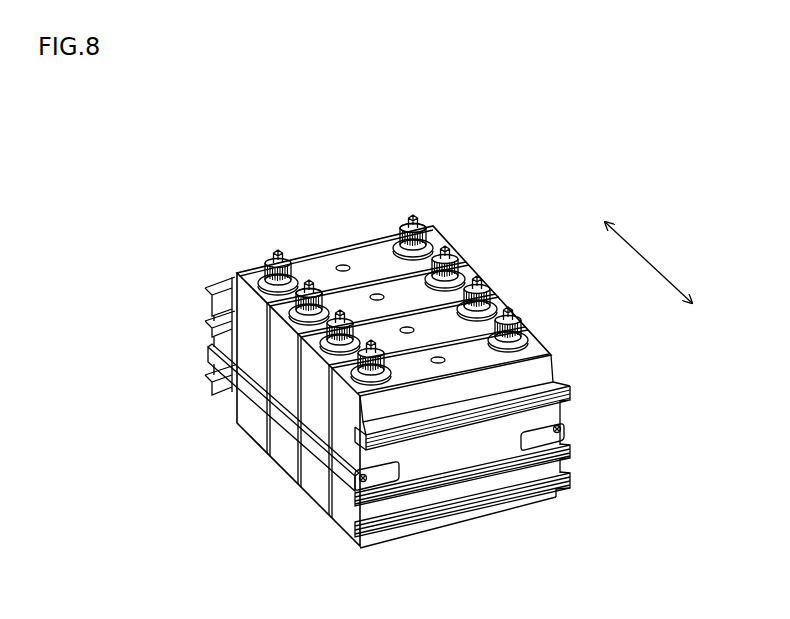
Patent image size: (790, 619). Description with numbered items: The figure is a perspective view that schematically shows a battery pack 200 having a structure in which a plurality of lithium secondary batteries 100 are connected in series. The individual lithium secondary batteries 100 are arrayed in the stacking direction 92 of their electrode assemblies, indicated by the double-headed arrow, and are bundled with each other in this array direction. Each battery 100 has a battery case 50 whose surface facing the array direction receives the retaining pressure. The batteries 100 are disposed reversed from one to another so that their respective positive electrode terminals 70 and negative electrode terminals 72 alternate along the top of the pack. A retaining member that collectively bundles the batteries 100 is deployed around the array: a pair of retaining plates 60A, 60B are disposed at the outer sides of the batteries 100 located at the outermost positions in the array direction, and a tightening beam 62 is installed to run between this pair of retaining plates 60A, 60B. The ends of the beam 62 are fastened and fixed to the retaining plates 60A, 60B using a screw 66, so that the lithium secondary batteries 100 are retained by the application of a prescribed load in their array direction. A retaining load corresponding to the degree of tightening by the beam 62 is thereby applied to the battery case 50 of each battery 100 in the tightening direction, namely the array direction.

The battery pack 200 is at (500, 152).
The battery case 50 is at (282, 457).
The lithium secondary battery 100 is at (360, 262).
The positive electrode terminal 70 is at (282, 262).
The negative electrode terminal 72 is at (309, 284).
The retaining plate 60A is at (497, 450).
The retaining plate 60B is at (223, 292).
The screw 66 is at (562, 425).
The tightening beam 62 is at (222, 356).
The stacking direction 92 is at (648, 262).